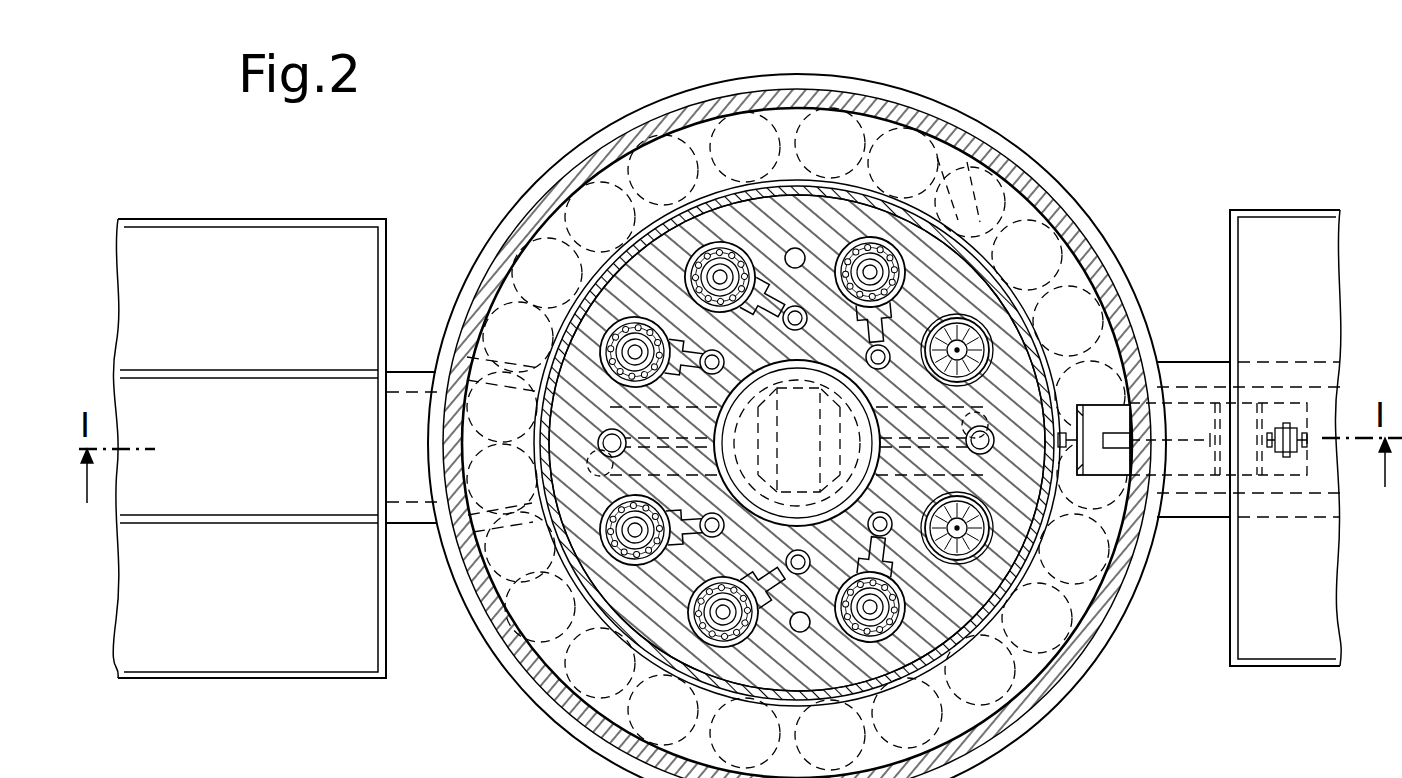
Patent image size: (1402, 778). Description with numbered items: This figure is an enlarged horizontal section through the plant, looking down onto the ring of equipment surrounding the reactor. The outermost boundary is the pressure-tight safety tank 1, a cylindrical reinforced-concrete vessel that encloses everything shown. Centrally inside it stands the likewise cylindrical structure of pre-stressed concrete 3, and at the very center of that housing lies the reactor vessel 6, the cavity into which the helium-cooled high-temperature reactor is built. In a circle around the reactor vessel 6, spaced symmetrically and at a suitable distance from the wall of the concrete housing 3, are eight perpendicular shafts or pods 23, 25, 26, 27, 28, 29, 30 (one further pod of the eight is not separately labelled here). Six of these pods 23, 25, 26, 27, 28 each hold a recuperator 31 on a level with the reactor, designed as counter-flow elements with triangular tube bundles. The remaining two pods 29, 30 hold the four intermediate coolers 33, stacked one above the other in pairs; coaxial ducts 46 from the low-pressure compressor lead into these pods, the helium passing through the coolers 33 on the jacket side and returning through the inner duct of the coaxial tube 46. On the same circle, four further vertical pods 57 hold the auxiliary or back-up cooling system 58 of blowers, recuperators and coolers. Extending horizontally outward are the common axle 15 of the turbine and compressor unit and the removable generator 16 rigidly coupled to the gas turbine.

The safety tank 1 is at (1020, 170).
The pre-stressed concrete structure 3 is at (988, 322).
The reactor vessel 6 is at (812, 548).
The common axle 15 is at (1054, 470).
The generator 16 is at (1117, 465).
The pod 23 is at (983, 622).
The pod 25 is at (587, 592).
The pod 26 is at (607, 378).
The pod 27 is at (688, 247).
The pod 28 is at (850, 235).
The pod 29 is at (955, 318).
The pod 30 is at (1028, 562).
The recuperator 31 is at (871, 272).
The intermediate cooler 33 is at (985, 347).
The coaxial duct 46 is at (982, 495).
The pod 57 is at (598, 442).
The auxiliary cooling system 58 is at (788, 252).